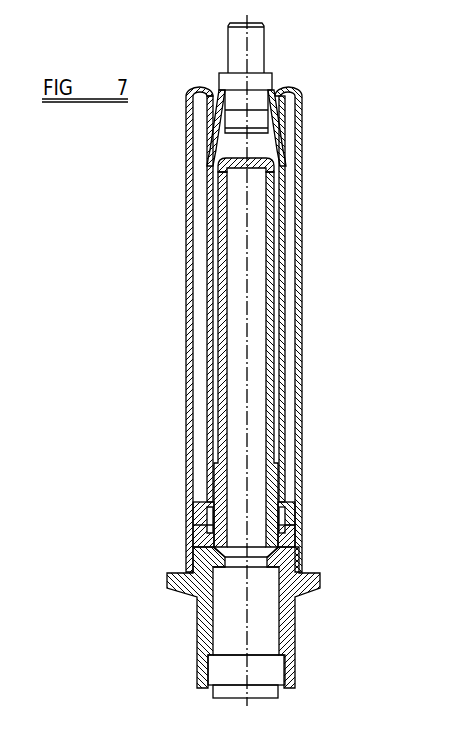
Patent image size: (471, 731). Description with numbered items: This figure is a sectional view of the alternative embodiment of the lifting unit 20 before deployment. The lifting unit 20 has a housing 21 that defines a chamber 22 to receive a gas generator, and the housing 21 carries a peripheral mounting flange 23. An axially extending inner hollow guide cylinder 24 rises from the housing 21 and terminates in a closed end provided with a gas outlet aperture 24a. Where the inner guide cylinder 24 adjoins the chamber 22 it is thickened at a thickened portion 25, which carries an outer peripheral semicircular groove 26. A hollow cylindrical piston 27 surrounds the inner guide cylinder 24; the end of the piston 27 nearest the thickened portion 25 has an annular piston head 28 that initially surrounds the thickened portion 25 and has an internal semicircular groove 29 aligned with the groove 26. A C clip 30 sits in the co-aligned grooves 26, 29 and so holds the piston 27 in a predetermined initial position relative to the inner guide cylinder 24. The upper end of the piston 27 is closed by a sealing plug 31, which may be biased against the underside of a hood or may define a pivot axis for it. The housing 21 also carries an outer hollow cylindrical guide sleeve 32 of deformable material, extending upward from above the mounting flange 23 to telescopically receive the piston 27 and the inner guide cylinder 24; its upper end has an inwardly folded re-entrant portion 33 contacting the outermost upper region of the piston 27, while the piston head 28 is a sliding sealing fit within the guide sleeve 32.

The lifting unit 20 is at (157, 422).
The housing 21 is at (290, 612).
The chamber 22 is at (232, 620).
The peripheral mounting flange 23 is at (320, 582).
The inner hollow guide cylinder 24 is at (265, 405).
The gas outlet aperture 24a is at (252, 158).
The thickened portion 25 is at (277, 487).
The outer peripheral semicircular groove 26 is at (288, 533).
The hollow cylindrical piston 27 is at (282, 318).
The piston head 28 is at (287, 518).
The internal semicircular groove 29 is at (288, 508).
The C clip 30 is at (183, 522).
The sealing plug 31 is at (258, 58).
The outer hollow cylindrical guide sleeve 32 is at (303, 238).
The inwardly folded re-entrant portion 33 is at (303, 120).